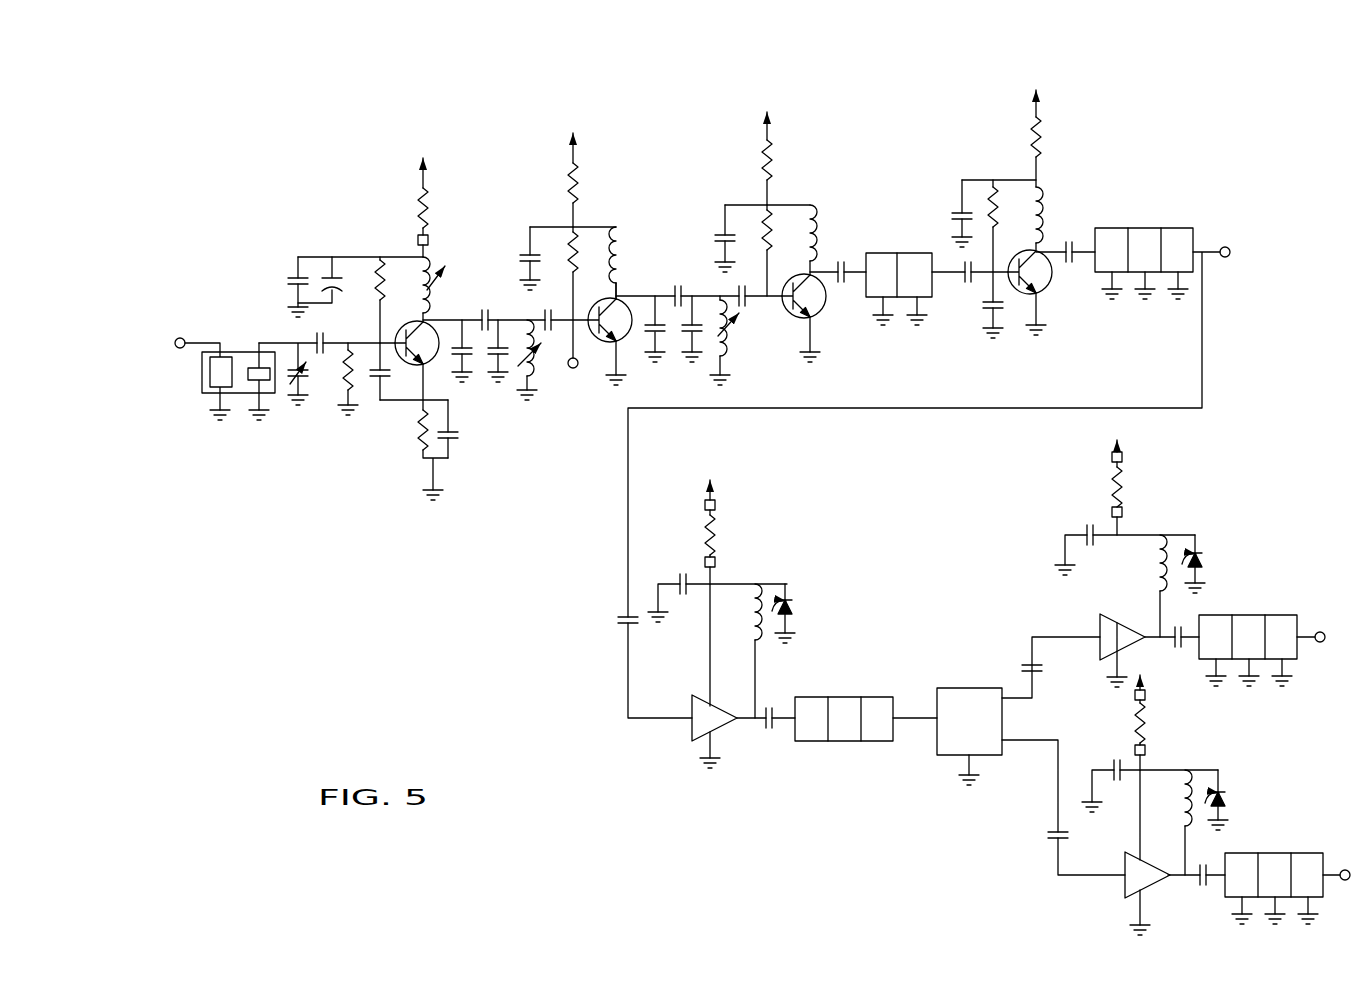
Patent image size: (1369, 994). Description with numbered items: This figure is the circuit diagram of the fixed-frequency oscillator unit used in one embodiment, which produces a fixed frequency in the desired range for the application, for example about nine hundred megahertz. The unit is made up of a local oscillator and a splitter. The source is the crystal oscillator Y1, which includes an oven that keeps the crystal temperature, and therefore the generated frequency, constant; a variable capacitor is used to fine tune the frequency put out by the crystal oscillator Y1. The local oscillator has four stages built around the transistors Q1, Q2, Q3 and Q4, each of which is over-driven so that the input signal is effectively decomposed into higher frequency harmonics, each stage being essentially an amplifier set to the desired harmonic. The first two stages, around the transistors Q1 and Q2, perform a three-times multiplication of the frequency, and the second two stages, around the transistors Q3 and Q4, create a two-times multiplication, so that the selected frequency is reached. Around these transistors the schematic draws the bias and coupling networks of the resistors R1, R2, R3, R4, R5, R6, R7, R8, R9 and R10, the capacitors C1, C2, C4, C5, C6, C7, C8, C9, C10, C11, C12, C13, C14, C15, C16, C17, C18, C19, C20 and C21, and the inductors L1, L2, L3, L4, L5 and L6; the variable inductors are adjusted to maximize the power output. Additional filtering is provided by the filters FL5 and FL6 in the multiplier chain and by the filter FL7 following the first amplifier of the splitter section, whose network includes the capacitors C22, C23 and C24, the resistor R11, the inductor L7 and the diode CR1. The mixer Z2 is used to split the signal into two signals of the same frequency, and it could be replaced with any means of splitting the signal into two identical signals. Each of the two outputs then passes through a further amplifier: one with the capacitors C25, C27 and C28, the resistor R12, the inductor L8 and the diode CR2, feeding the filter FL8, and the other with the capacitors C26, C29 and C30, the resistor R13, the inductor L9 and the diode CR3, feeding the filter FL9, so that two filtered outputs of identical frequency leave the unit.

The crystal oscillator Y1 is at (243, 333).
The resistor R3 is at (441, 207).
The inductor L1 is at (442, 282).
The capacitor C4 is at (285, 287).
The capacitor C5 is at (329, 286).
The resistor R1 is at (392, 300).
The capacitor C1 is at (313, 388).
The resistor R2 is at (340, 373).
The capacitor C2 is at (365, 372).
The resistor R4 is at (407, 430).
The capacitor C6 is at (459, 433).
The transistor Q1 is at (430, 372).
The capacitor C8 is at (492, 309).
The capacitor C7 is at (470, 360).
The capacitor C9 is at (512, 367).
The inductor L2 is at (541, 360).
The transistor Q2 is at (600, 350).
The capacitor C10 is at (550, 307).
The capacitor C11 is at (513, 258).
The resistor R5 is at (591, 180).
The resistor R6 is at (590, 297).
The inductor L3 is at (632, 259).
The capacitor C13 is at (677, 284).
The capacitor C12 is at (638, 335).
The capacitor C14 is at (680, 338).
The inductor L4 is at (734, 340).
The capacitor C15 is at (745, 277).
The capacitor C16 is at (706, 238).
The resistor R7 is at (784, 158).
The resistor R8 is at (783, 250).
The inductor L5 is at (830, 240).
The capacitor C17 is at (853, 258).
The filter FL5 is at (902, 232).
The capacitor C18 is at (951, 284).
The capacitor C19 is at (974, 319).
The capacitor C20 is at (944, 213).
The resistor R9 is at (1007, 241).
The resistor R10 is at (1061, 138).
The inductor L6 is at (1056, 218).
The transistor Q3 is at (826, 318).
The transistor Q4 is at (1054, 294).
The capacitor C21 is at (1074, 263).
The filter FL6 is at (1148, 217).
The capacitor C22 is at (606, 620).
The resistor R11 is at (732, 532).
The capacitor C23 is at (679, 572).
The inductor L7 is at (740, 651).
The varactor diode CR1 is at (805, 612).
The filter FL7 is at (847, 690).
The capacitor C24 is at (769, 734).
The mixer Z2 is at (975, 676).
The capacitor C25 is at (1053, 668).
The capacitor C28 is at (1087, 521).
The resistor R12 is at (1140, 487).
The inductor L8 is at (1148, 586).
The varactor diode CR2 is at (1213, 561).
The filter FL8 is at (1263, 608).
The capacitor C27 is at (1177, 650).
The capacitor C26 is at (1035, 837).
The capacitor C29 is at (1112, 759).
The resistor R13 is at (1166, 722).
The inductor L9 is at (1173, 822).
The varactor diode CR3 is at (1236, 797).
The filter FL9 is at (1282, 847).
The capacitor C30 is at (1194, 889).